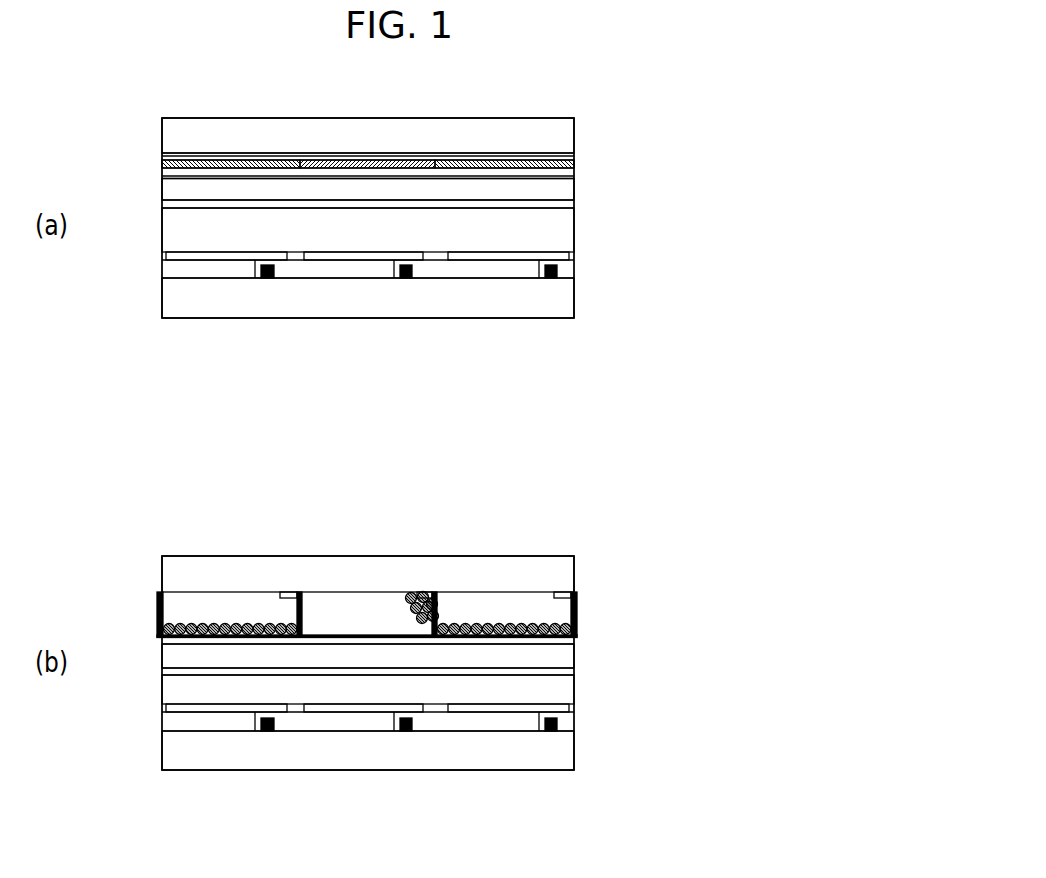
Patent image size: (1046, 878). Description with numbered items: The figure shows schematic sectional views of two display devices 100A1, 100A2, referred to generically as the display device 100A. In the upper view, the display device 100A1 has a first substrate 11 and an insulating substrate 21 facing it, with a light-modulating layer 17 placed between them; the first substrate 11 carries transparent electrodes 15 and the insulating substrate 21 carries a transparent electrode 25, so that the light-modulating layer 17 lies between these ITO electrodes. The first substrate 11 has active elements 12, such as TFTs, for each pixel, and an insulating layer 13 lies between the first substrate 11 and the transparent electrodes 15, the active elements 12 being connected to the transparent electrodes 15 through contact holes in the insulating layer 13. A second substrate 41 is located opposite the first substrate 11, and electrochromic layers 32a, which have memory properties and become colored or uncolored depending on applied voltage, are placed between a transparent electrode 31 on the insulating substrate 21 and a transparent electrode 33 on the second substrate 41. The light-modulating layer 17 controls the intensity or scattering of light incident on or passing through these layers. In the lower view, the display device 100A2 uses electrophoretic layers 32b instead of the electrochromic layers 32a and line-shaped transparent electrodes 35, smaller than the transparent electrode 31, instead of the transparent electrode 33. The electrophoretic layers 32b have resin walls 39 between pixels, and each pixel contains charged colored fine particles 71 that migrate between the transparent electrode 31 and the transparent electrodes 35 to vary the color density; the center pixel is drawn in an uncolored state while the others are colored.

The display device 100A is at (507, 408).
The display device 100A1 is at (681, 89).
The display device 100A2 is at (681, 541).
The first substrate 11 is at (167, 305).
The active element 12 is at (556, 278).
The insulating layer 13 is at (567, 266).
The transparent electrodes 15 is at (166, 257).
The light-modulating layer 17 is at (566, 232).
The insulating substrate 21 is at (167, 183).
The transparent electrode 25 is at (573, 203).
The transparent electrode 31 is at (570, 176).
The electrochromic layers 32a is at (575, 165).
The electrophoretic layers 32b is at (563, 614).
The transparent electrode 33 is at (166, 153).
The line-shaped transparent electrodes 35 is at (286, 592).
The resin walls 39 is at (301, 592).
The second substrate 41 is at (557, 122).
The charged colored fine particles 71 is at (417, 592).